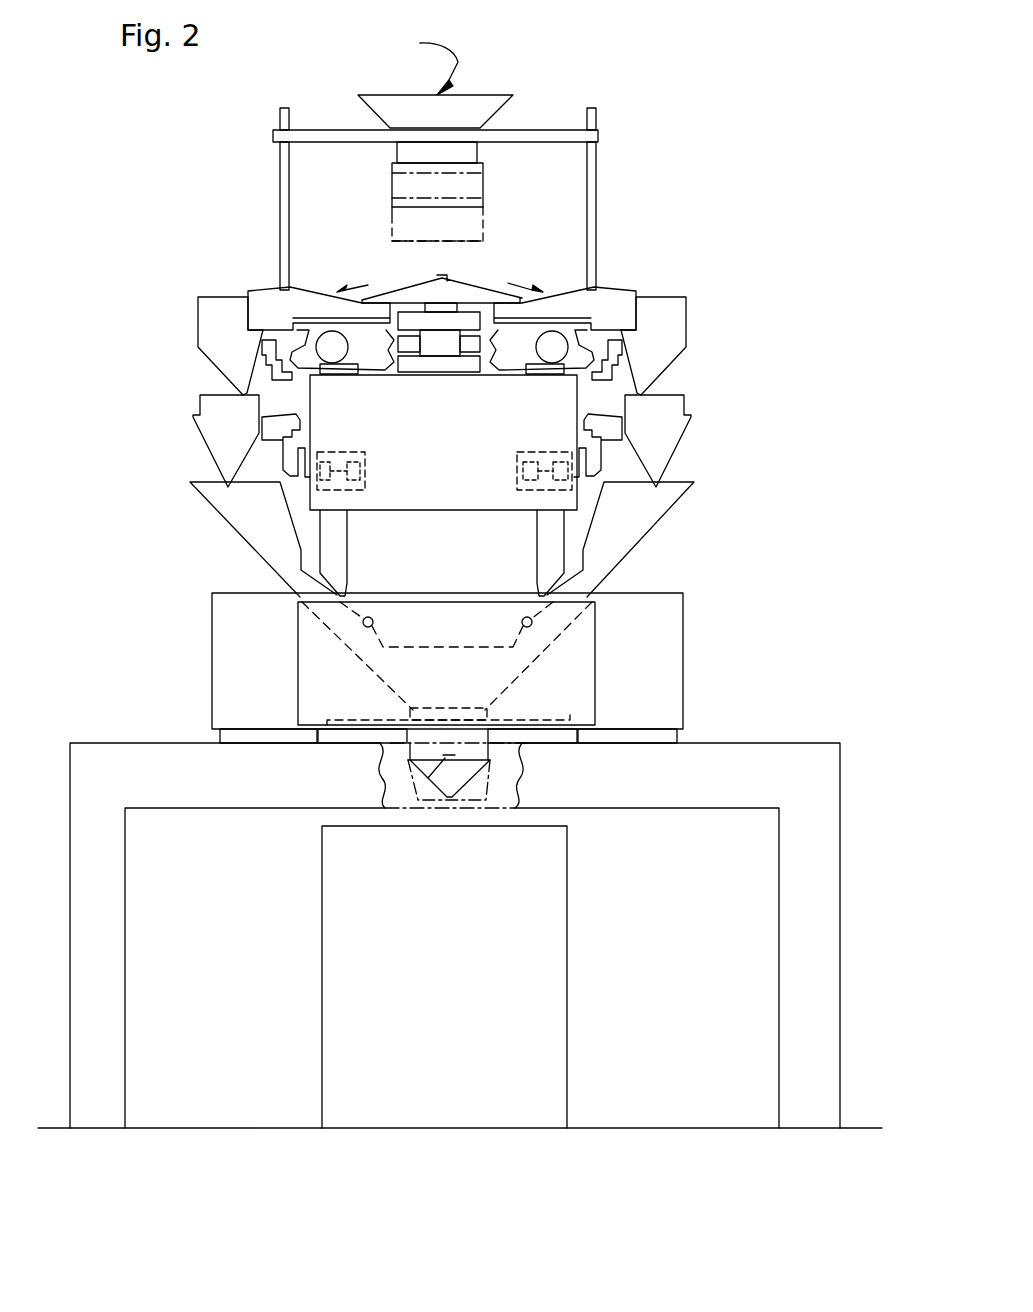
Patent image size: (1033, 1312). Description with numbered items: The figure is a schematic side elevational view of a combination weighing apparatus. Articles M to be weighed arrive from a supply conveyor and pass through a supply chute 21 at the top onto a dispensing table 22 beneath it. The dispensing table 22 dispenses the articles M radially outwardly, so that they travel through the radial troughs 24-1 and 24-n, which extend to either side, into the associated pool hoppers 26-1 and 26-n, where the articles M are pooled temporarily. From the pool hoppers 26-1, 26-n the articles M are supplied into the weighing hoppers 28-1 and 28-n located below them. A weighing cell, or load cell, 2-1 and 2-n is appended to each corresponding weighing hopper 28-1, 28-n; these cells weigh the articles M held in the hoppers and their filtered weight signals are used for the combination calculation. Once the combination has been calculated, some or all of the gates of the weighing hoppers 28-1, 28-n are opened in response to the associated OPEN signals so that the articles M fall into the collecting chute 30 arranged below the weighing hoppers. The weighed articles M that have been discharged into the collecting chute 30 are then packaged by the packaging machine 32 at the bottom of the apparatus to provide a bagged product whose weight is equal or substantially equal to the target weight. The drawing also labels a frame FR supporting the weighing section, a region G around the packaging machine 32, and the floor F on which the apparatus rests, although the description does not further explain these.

The supply chute 21 is at (397, 103).
The articles to be weighed M is at (426, 58).
The dispensing table 22 is at (395, 290).
The radial trough 24-1 is at (265, 287).
The radial trough 24-n is at (619, 287).
The pool hopper 26-1 is at (198, 323).
The pool hopper 26-n is at (687, 310).
The weighing hopper 28-1 is at (202, 443).
The weighing hopper 28-n is at (687, 405).
The weighing cell (load cell) 2-1 is at (335, 452).
The weighing cell (load cell) 2-n is at (547, 452).
The frame FR is at (548, 548).
The collecting chute 30 is at (635, 537).
The packaging machine G is at (742, 749).
The packaging machine 32 is at (563, 939).
The floor F is at (693, 1130).